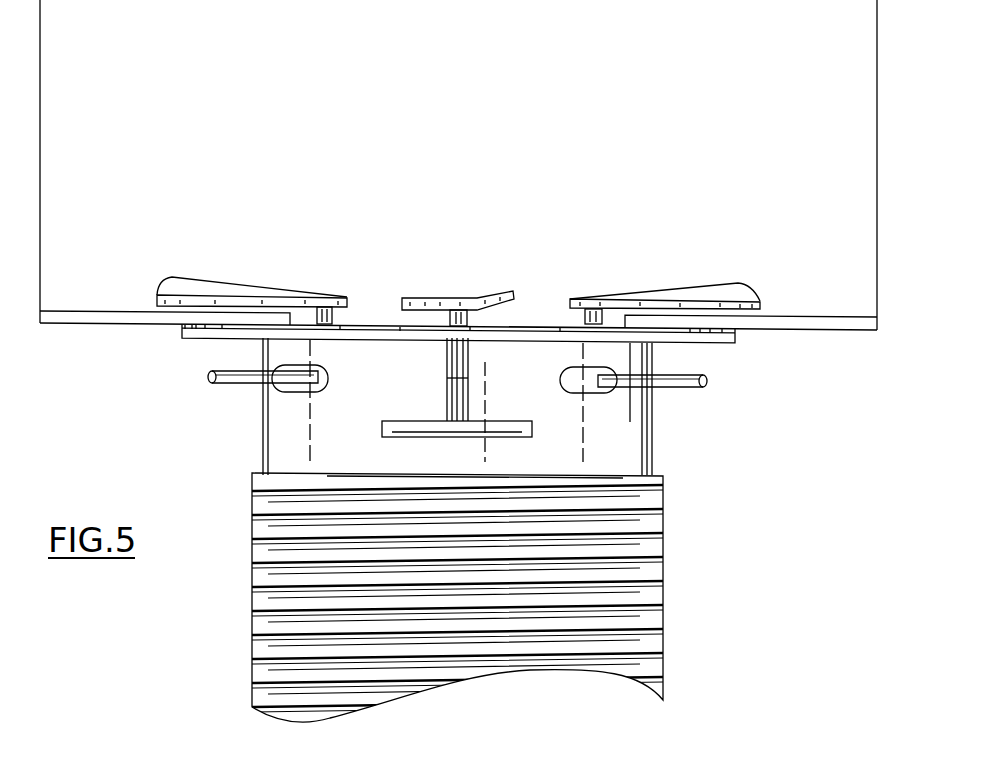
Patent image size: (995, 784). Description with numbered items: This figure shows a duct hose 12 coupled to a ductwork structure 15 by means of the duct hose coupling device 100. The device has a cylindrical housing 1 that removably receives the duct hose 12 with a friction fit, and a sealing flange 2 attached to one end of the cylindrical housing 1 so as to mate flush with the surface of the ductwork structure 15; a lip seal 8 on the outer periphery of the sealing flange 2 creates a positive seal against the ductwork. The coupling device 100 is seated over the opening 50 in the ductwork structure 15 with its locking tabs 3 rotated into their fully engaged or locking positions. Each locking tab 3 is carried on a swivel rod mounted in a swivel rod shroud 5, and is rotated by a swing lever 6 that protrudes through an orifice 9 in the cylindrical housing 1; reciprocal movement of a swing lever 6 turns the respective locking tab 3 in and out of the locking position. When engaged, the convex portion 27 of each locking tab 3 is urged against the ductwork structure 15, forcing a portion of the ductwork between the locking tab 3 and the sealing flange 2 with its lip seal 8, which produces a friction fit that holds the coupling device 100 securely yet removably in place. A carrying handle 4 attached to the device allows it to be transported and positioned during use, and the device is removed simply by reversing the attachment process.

The cylindrical housing 1 is at (617, 465).
The sealing flange 2 is at (688, 341).
The locking tab 3 is at (205, 290).
The carrying handle 4 is at (458, 362).
The swivel rod shroud 5 is at (290, 392).
The swing lever 6 is at (222, 380).
The lip seal 8 is at (200, 333).
The orifice 9 is at (302, 394).
The duct hose 12 is at (265, 597).
The ductwork structure 15 is at (830, 158).
The convex portion 27 is at (470, 313).
The opening 50 is at (545, 312).
The duct hose coupling device 100 is at (700, 463).